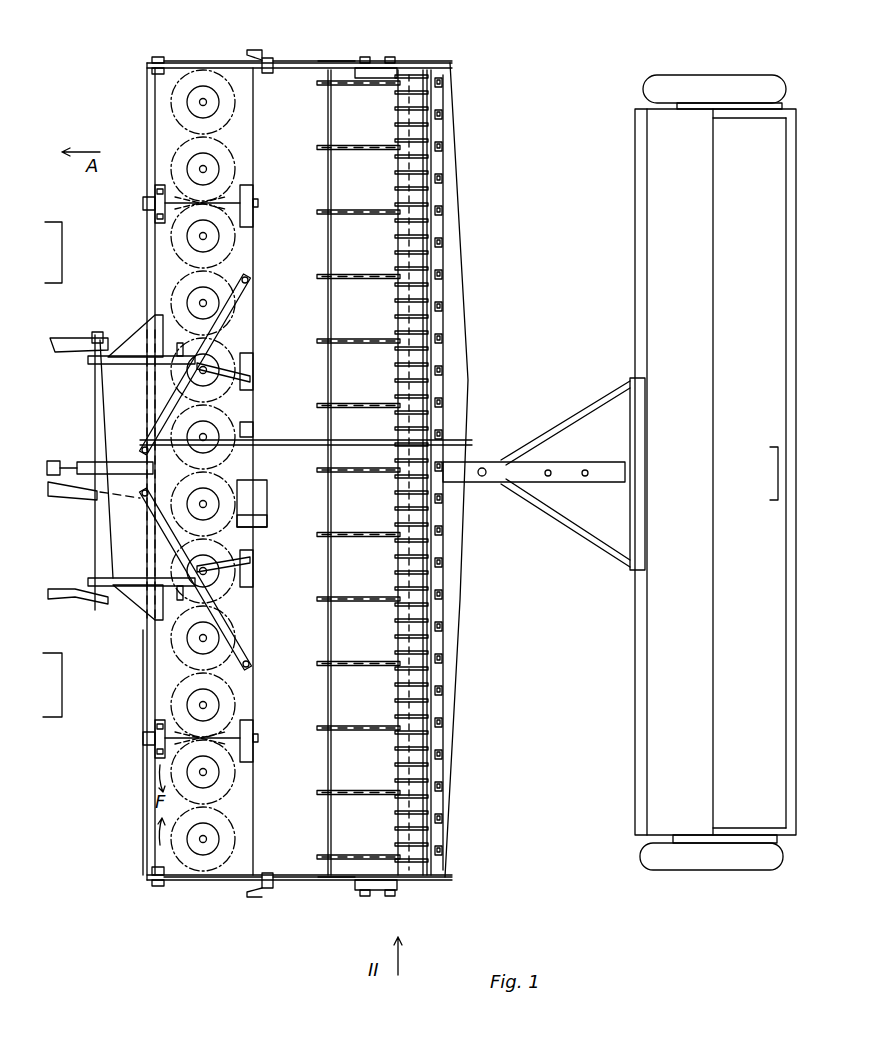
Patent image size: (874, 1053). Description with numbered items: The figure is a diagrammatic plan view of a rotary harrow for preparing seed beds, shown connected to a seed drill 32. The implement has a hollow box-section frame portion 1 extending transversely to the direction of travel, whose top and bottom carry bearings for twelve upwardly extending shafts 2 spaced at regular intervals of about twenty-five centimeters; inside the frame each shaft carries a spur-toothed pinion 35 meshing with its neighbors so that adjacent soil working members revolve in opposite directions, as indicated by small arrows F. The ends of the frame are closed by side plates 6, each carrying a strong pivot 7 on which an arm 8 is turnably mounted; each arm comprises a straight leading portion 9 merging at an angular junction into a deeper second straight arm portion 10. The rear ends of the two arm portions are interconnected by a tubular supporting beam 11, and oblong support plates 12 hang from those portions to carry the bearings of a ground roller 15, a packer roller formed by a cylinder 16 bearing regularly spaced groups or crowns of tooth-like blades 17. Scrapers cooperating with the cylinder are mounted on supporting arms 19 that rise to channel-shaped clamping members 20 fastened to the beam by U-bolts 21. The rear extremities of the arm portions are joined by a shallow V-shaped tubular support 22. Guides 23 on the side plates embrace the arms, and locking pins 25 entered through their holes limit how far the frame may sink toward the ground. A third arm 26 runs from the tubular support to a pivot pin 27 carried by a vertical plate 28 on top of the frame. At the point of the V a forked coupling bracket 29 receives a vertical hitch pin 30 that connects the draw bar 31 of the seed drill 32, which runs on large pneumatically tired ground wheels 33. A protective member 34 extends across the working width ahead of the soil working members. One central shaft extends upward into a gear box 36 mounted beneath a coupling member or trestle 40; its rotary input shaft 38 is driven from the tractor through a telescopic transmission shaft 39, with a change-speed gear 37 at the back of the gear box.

The hollow box-section frame portion 1 is at (155, 263).
The shaft 2 is at (205, 240).
The side plate 6 is at (185, 63).
The pivot 7 is at (158, 60).
The arm 8 is at (316, 66).
The straight leading portion 9 is at (200, 479).
The second straight arm portion 10 is at (340, 63).
The tubular supporting beam 11 is at (398, 238).
The support plate 12 is at (382, 62).
The ground roller 15 is at (320, 581).
The cylinder 16 is at (330, 637).
The blades 17 is at (317, 665).
The supporting arms 19 is at (442, 546).
The clamping member 20 is at (442, 598).
The U-bolts 21 is at (400, 558).
The tubular support 22 is at (460, 266).
The guide 23 is at (272, 74).
The locking pins 25 is at (262, 52).
The third arm 26 is at (292, 447).
The pivot pin 27 is at (250, 398).
The plate 28 is at (250, 433).
The forked coupling bracket 29 is at (470, 462).
The pivotal hitch pin 30 is at (486, 470).
The draw bar 31 is at (565, 483).
The seed drill 32 is at (647, 650).
The ground wheels 33 is at (643, 89).
The protective member 34 is at (147, 681).
The pinion 35 is at (192, 698).
The gear box 36 is at (267, 496).
The change-speed gear 37 is at (267, 524).
The rotary input shaft 38 is at (203, 504).
The telescopic transmission shaft 39 is at (80, 497).
The coupling member or trestle 40 is at (100, 412).